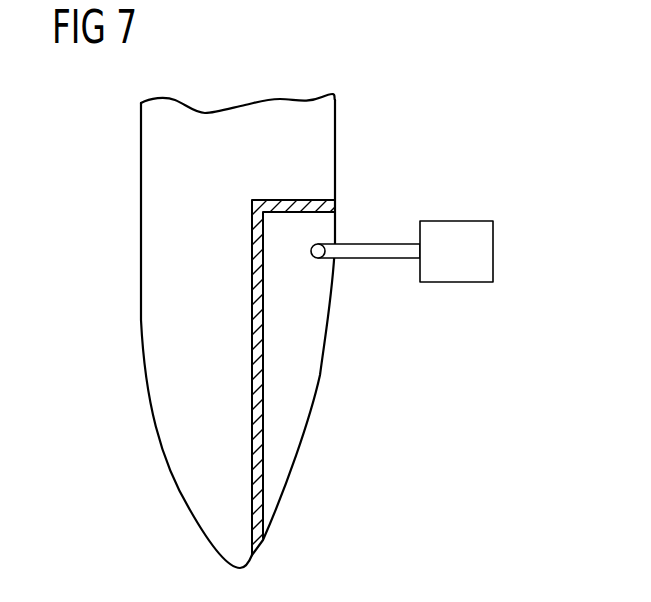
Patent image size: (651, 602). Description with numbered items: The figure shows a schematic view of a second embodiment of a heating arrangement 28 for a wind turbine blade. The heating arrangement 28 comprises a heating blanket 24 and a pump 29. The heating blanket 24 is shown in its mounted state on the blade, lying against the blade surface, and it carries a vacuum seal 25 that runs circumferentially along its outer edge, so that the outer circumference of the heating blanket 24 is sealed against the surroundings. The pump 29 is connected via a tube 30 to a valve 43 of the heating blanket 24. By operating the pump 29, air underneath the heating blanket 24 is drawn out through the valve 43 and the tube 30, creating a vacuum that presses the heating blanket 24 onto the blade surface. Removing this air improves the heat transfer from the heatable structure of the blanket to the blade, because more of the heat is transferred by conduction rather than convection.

The heating blanket 24 is at (315, 385).
The vacuum seal 25 is at (258, 447).
The heating arrangement 28 is at (417, 148).
The pump 29 is at (493, 250).
The tube 30 is at (378, 260).
The valve 43 is at (313, 260).